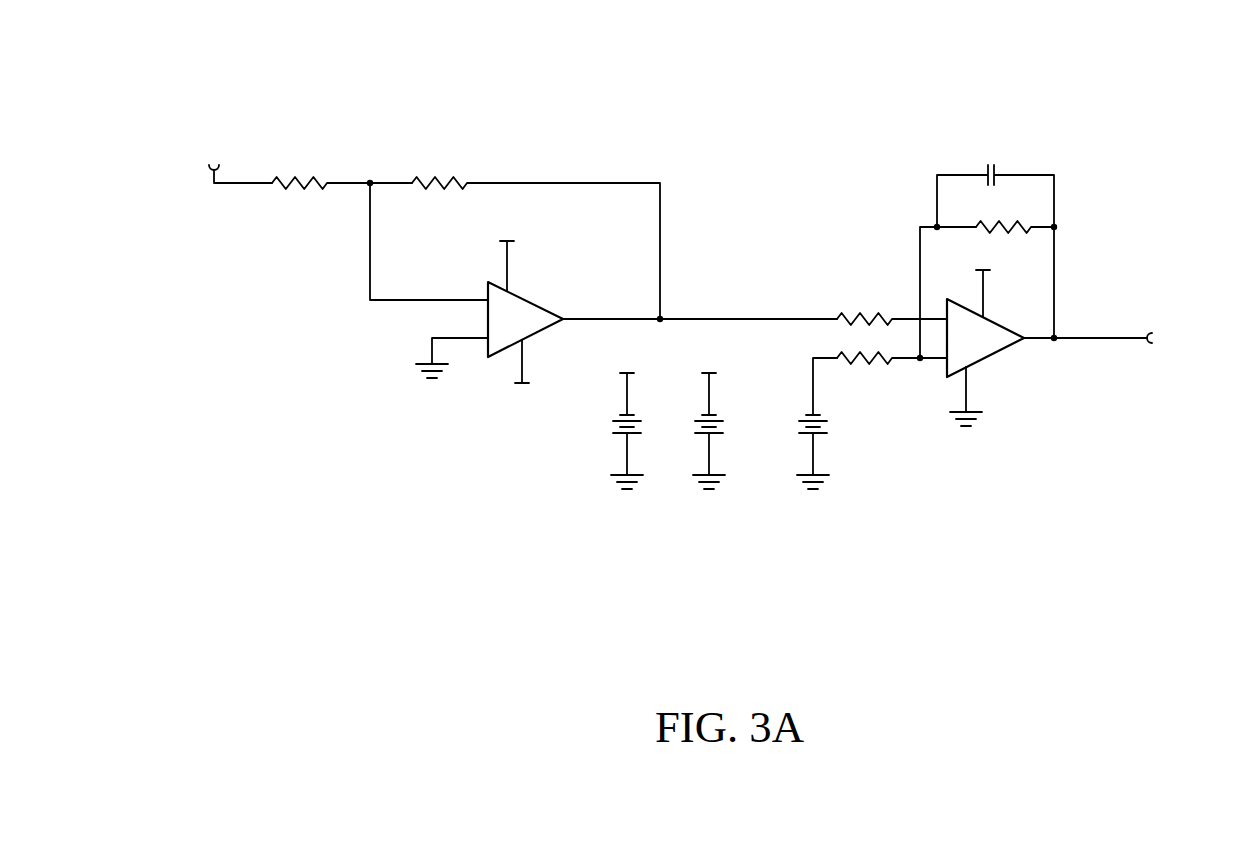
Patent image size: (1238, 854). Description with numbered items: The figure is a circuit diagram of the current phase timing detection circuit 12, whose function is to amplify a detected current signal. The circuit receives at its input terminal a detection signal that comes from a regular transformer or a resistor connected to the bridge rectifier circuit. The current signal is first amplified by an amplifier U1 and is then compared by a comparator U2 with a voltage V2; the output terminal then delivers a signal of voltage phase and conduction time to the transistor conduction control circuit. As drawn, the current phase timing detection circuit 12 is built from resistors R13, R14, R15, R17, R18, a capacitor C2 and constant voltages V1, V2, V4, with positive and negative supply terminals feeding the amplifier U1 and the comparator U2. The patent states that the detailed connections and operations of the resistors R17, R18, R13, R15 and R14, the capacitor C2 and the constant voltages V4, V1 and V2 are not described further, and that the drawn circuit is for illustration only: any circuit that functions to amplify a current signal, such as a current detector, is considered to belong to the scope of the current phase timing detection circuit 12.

The current phase timing detection circuit 12 is at (844, 95).
The resistor R17 is at (342, 170).
The resistor R18 is at (536, 235).
The amplifier U1 is at (489, 315).
The constant voltage V4 is at (614, 416).
The constant voltage V1 is at (696, 416).
The voltage V2 is at (804, 423).
The resistor R13 is at (892, 308).
The resistor R15 is at (892, 346).
The resistor R14 is at (1015, 215).
The capacitor C2 is at (995, 236).
The comparator U2 is at (985, 335).